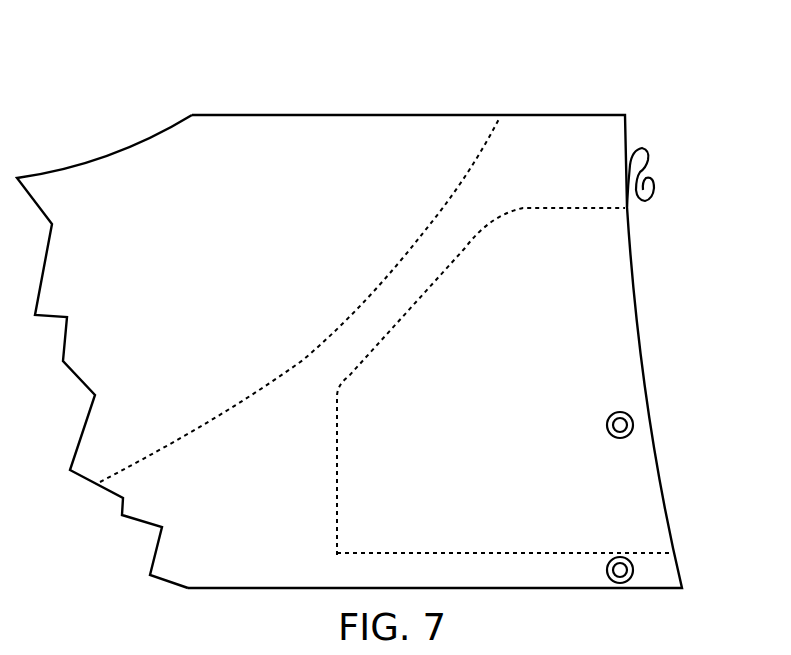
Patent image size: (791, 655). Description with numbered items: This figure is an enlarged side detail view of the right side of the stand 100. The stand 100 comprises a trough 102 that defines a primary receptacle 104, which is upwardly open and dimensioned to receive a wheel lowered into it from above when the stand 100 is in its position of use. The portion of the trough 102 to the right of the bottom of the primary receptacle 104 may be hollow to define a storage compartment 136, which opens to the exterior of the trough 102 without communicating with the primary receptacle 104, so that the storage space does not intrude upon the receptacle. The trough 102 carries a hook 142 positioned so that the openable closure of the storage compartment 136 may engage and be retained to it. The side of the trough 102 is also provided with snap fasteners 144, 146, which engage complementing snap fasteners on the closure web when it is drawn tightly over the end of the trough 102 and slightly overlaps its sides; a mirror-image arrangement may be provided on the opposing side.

The stand 100 is at (289, 54).
The trough 102 is at (410, 95).
The primary receptacle 104 is at (125, 125).
The storage compartment 136 is at (548, 198).
The hook 142 is at (664, 159).
The snap fastener 144 is at (610, 423).
The snap fastener 146 is at (609, 565).